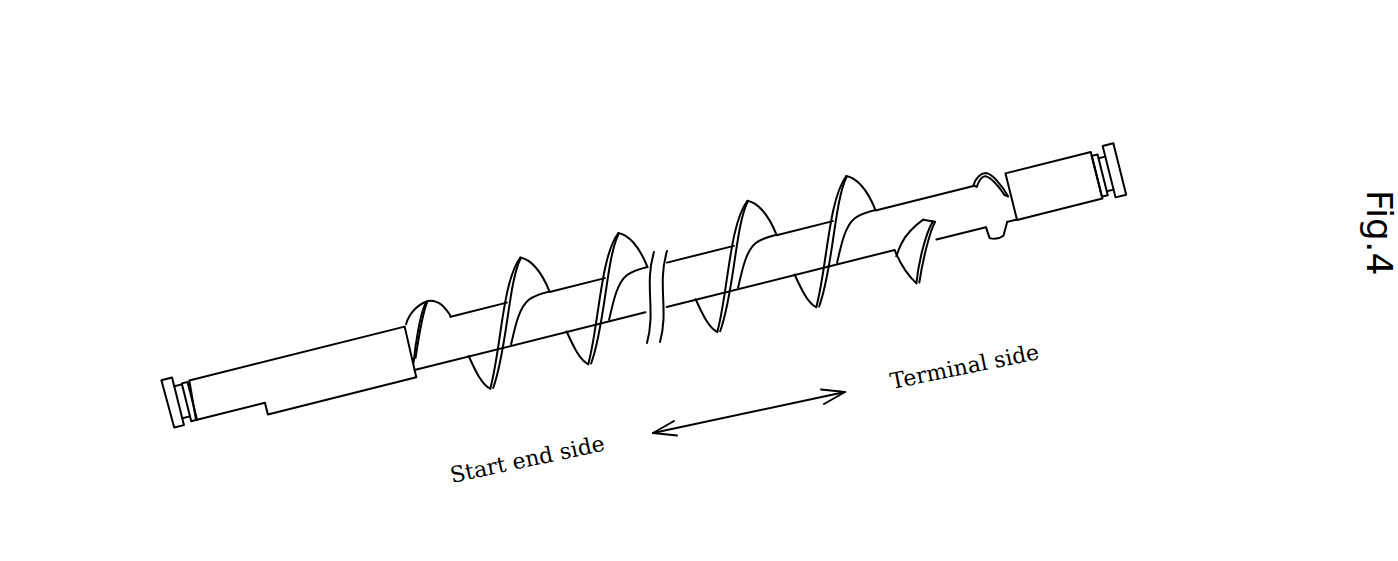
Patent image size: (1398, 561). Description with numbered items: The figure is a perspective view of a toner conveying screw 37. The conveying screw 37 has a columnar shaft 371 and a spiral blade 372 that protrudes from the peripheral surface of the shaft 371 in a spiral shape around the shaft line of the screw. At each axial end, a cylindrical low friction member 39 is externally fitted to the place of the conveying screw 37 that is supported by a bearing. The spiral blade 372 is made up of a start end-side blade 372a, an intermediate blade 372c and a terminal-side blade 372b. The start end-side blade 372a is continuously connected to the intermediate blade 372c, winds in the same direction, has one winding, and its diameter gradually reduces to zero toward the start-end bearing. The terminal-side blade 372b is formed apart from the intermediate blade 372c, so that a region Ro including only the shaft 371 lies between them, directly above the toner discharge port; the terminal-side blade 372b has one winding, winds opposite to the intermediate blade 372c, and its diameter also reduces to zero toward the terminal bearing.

The conveying screw 37 is at (418, 175).
The low friction member 39 is at (372, 342).
The shaft 371 is at (582, 282).
The spiral blade 372 is at (758, 200).
The start end-side blade 372a is at (440, 292).
The terminal-side blade 372b is at (978, 173).
The intermediate blade 372c is at (622, 242).
The region Ro is at (990, 236).